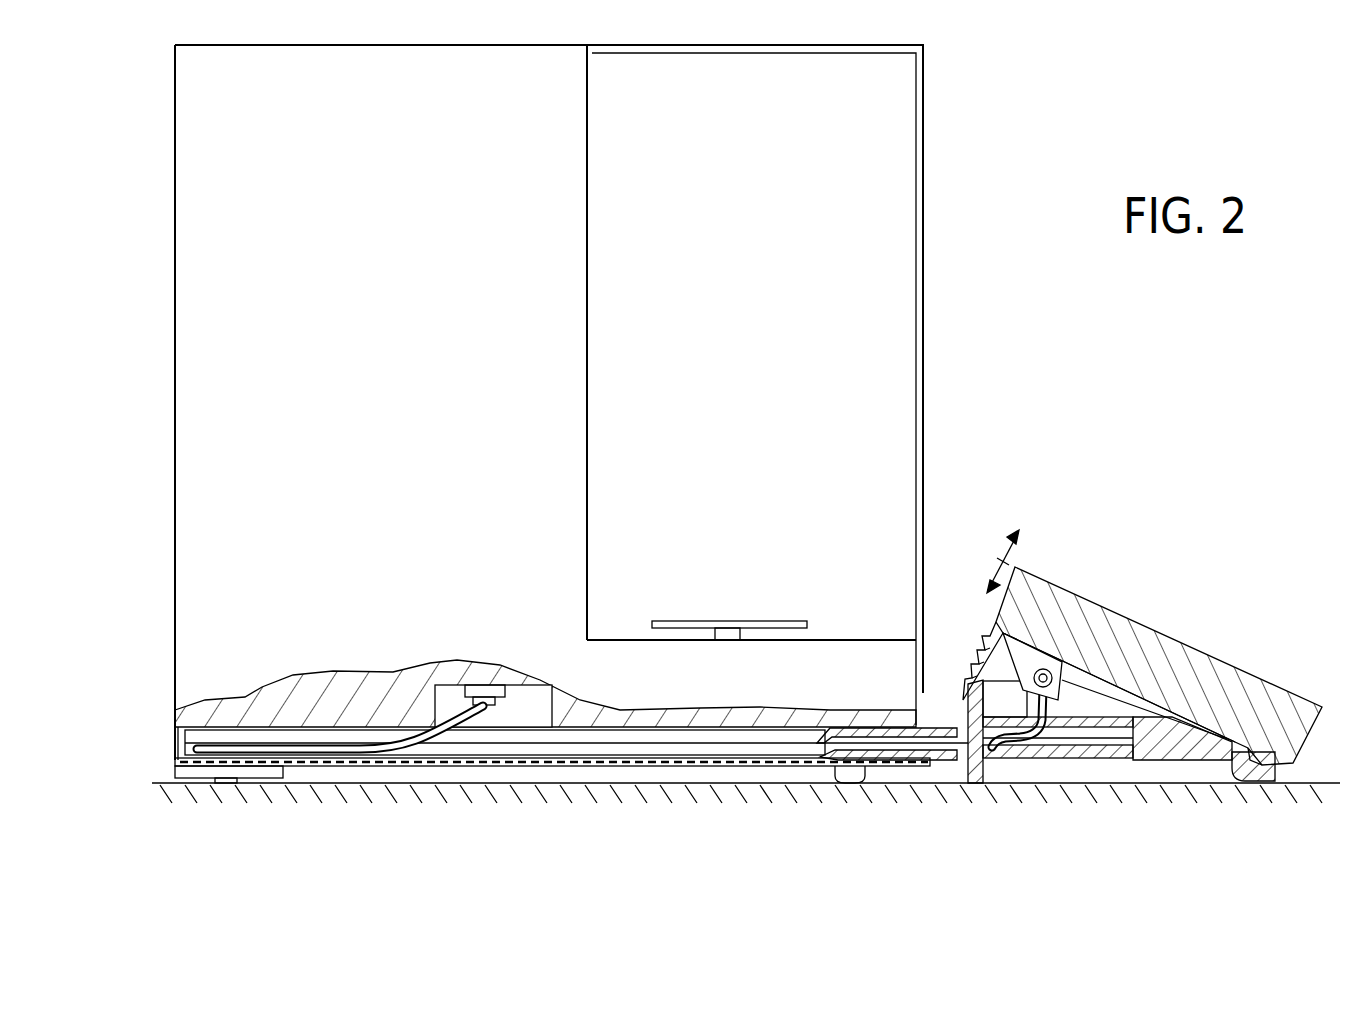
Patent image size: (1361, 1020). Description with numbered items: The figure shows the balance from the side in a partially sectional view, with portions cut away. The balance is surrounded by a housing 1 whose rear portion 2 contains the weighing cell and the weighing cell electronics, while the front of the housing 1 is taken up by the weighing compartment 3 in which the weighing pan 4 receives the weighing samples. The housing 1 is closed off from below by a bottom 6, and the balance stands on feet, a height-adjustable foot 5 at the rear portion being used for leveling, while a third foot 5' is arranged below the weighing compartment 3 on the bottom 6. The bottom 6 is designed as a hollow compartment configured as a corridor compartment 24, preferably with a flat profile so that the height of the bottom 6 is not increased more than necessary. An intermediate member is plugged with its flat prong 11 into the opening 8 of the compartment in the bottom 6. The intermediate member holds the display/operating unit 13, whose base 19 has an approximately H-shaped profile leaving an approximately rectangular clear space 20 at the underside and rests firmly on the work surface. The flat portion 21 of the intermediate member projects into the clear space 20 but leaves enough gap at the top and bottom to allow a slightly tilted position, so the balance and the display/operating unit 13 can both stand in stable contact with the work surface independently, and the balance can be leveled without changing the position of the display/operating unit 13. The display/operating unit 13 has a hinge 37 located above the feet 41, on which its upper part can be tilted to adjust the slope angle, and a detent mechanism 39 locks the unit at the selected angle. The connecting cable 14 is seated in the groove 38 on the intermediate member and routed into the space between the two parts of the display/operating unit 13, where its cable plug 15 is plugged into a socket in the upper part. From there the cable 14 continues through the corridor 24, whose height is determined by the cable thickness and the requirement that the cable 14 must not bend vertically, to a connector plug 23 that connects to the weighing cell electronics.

The housing 1 is at (152, 633).
The rear portion 2 is at (207, 537).
The weighing compartment 3 is at (878, 237).
The weighing pan 4 is at (737, 622).
The foot 5 is at (229, 815).
The third foot 5' is at (820, 813).
The bottom 6 is at (712, 776).
The opening 8 is at (927, 752).
The flat prong 11 is at (886, 752).
The display/operating unit 13 is at (1221, 640).
The connecting cable 14 is at (553, 745).
The cable plug 15 is at (1050, 668).
The base 19 is at (1203, 742).
The clear space 20 is at (1083, 730).
The flat portion 21 is at (1117, 747).
The connector plug 23 is at (487, 700).
The corridor compartment 24 is at (620, 742).
The hinge 37 is at (1247, 758).
The groove 38 is at (1003, 750).
The detent mechanism 39 is at (1006, 648).
The feet 41 is at (1273, 782).